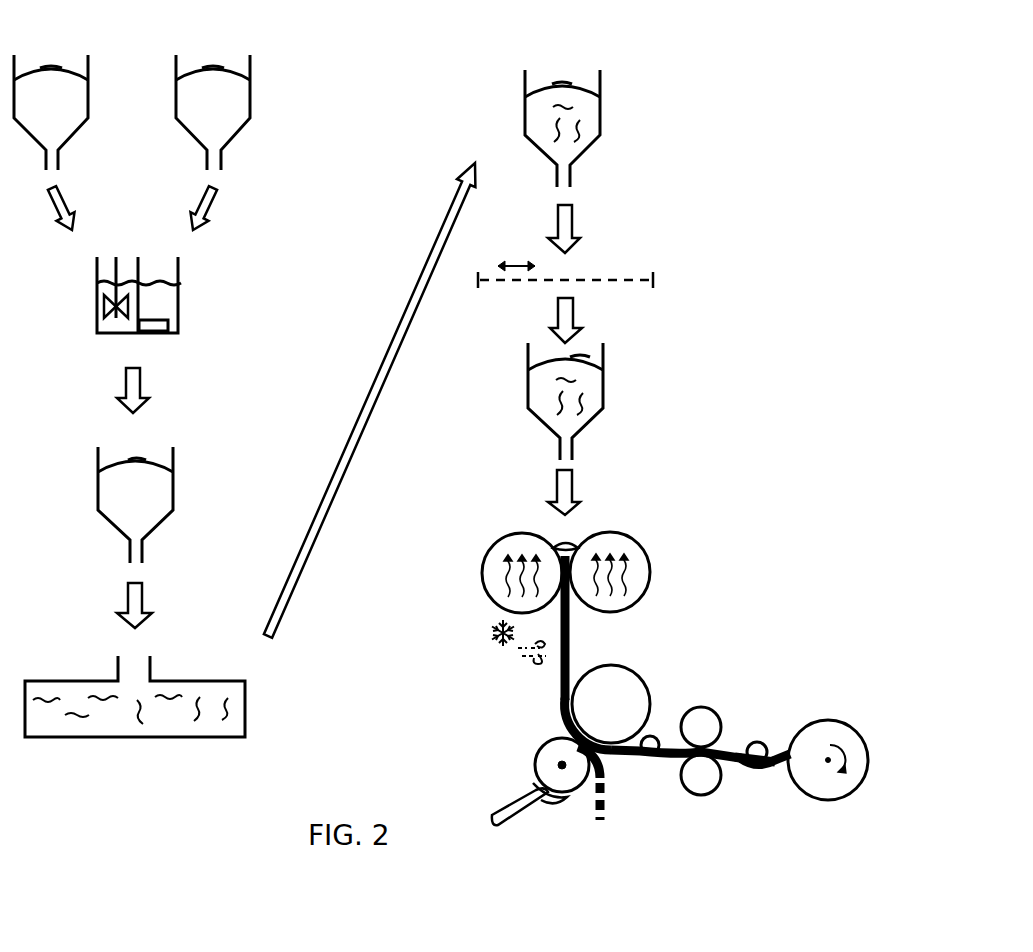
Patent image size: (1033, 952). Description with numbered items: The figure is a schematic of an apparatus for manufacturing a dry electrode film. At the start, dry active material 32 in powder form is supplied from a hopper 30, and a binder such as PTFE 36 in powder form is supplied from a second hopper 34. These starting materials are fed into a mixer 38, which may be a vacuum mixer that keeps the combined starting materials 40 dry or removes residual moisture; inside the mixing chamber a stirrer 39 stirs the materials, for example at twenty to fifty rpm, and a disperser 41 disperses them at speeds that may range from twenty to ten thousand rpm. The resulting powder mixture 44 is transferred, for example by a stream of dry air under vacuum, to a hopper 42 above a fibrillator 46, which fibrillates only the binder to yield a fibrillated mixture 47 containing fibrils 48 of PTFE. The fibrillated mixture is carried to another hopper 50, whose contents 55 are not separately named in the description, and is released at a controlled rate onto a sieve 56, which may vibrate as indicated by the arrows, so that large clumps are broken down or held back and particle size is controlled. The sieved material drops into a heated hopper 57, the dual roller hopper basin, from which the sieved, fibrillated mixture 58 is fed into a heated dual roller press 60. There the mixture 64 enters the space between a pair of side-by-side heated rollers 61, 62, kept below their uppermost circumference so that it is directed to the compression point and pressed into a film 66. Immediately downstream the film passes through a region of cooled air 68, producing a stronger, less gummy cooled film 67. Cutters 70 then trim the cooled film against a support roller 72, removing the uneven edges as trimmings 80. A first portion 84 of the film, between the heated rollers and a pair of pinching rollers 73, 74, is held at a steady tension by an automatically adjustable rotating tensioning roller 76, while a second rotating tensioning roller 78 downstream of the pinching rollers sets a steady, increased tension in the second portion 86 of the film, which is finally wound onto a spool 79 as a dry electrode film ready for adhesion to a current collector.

The hopper 30 is at (92, 95).
The active material 32 is at (58, 68).
The hopper 34 is at (254, 95).
The PTFE 36 is at (216, 68).
The mixer 38 is at (180, 272).
The stirrer 39 is at (170, 322).
The combined starting materials 40 is at (148, 282).
The disperser 41 is at (103, 307).
The hopper 42 is at (176, 483).
The powder mixture 44 is at (140, 458).
The fibrillator 46 is at (82, 680).
The fibrillated mixture 47 is at (175, 725).
The fibrils 48 is at (80, 718).
The hopper 50 is at (602, 108).
The fiber material 55 is at (563, 83).
The sieve 56 is at (658, 281).
The heated hopper 57 is at (606, 378).
The sieved, fibrillated mixture 58 is at (580, 355).
The heated dual roller press 60 is at (660, 520).
The heated roller 61 is at (492, 545).
The heated roller 62 is at (648, 558).
The mixture 64 is at (569, 544).
The film 66 is at (569, 612).
The cooled film 67 is at (560, 682).
The cooled air 68 is at (488, 640).
The cutters 70 is at (518, 798).
The support roller 72 is at (634, 674).
The pinching roller 73 is at (715, 712).
The pinching roller 74 is at (716, 790).
The rotating tensioning roller 76 is at (653, 735).
The rotating tensioning roller 78 is at (762, 742).
The spool 79 is at (850, 730).
The trimmings 80 is at (596, 812).
The first portion of the film 84 is at (634, 764).
The second portion of the film 86 is at (773, 766).